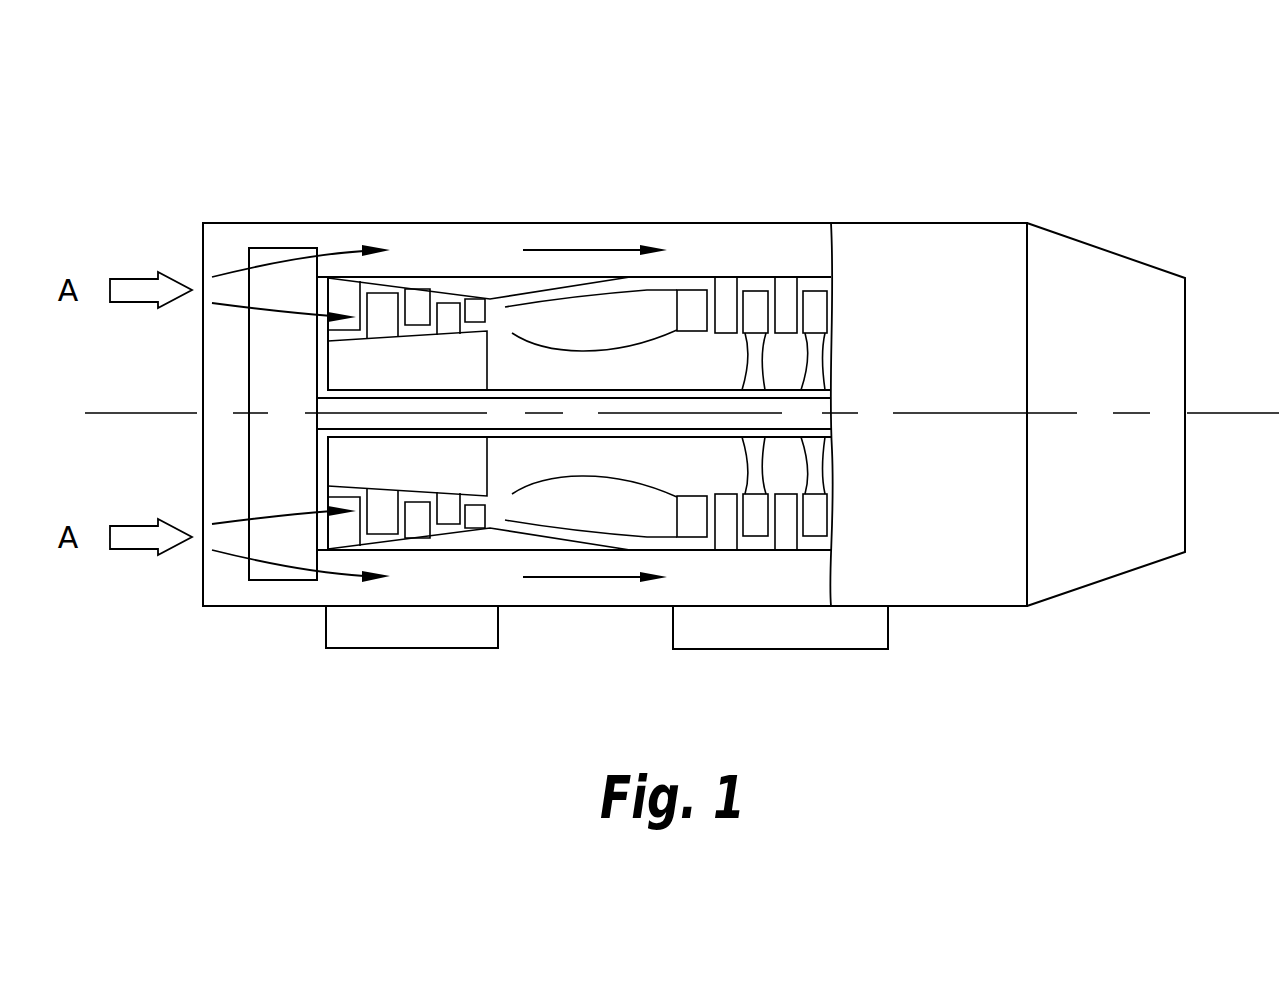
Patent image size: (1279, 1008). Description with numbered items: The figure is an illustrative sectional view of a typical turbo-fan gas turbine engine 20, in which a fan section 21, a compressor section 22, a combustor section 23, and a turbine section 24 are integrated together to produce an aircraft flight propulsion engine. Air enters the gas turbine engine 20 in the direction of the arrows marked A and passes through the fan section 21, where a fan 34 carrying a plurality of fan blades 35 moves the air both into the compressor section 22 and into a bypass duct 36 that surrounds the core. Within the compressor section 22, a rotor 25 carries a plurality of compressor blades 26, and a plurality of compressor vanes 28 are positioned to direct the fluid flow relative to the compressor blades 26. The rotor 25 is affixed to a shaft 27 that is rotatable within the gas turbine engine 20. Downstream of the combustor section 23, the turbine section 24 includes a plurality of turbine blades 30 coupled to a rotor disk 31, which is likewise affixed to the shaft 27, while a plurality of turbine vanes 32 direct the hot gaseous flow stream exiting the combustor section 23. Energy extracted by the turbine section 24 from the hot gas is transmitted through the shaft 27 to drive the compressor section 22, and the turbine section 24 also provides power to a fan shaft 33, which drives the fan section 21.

The gas turbine engine 20 is at (822, 136).
The fan section 21 is at (272, 582).
The compressor section 22 is at (407, 648).
The combustor section 23 is at (567, 277).
The turbine section 24 is at (843, 650).
The rotor 25 is at (353, 375).
The compressor blades 26 is at (383, 313).
The shaft 27 is at (596, 437).
The compressor vanes 28 is at (347, 283).
The turbine blades 30 is at (752, 520).
The rotor disk 31 is at (755, 463).
The turbine vanes 32 is at (723, 297).
The fan shaft 33 is at (480, 390).
The fan 34 is at (283, 445).
The fan blades 35 is at (270, 293).
The bypass duct 36 is at (350, 590).